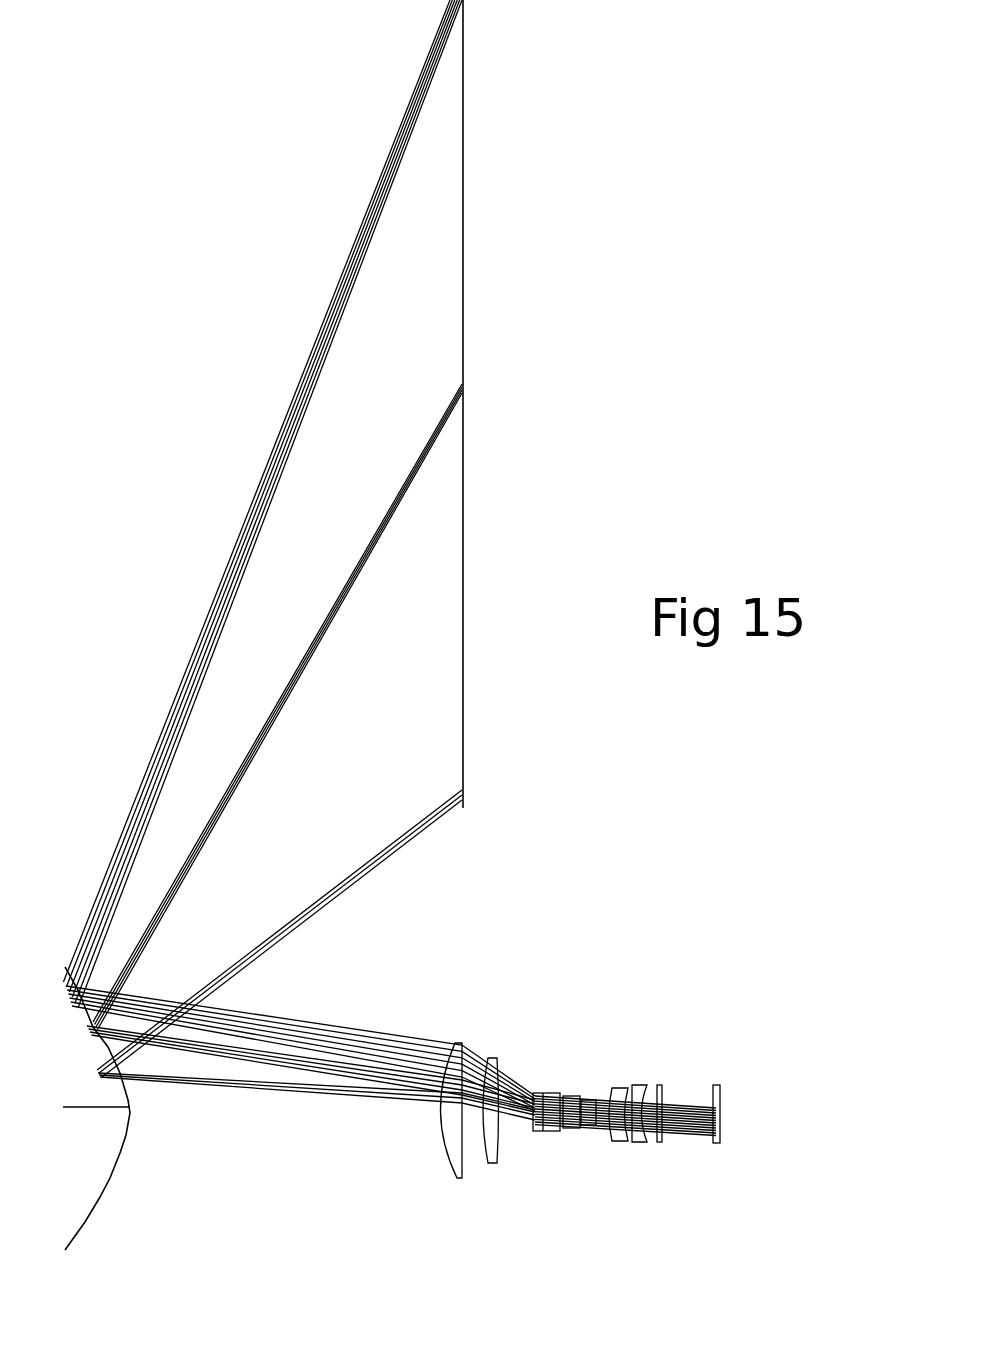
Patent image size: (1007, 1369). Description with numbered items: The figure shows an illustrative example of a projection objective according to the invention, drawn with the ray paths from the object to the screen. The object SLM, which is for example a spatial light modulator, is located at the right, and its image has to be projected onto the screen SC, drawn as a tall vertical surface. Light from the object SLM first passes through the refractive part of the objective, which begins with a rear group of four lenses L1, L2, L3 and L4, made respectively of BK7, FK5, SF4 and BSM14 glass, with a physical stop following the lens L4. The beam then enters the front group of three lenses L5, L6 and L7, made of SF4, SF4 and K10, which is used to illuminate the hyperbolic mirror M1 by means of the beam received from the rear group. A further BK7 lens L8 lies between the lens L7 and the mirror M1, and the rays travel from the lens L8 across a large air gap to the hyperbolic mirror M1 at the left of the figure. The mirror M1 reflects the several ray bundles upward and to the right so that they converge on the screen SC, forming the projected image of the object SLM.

The screen SC is at (472, 749).
The hyperbolic mirror M1 is at (126, 1162).
The lens L8 is at (429, 1154).
The lens L7 is at (469, 1156).
The lens L6 is at (533, 1138).
The lens L5 is at (561, 1141).
The lens L4 is at (583, 1139).
The lens L3 is at (610, 1150).
The lens L2 is at (642, 1154).
The lens L1 is at (668, 1161).
The spatial light modulator SLM is at (728, 1145).